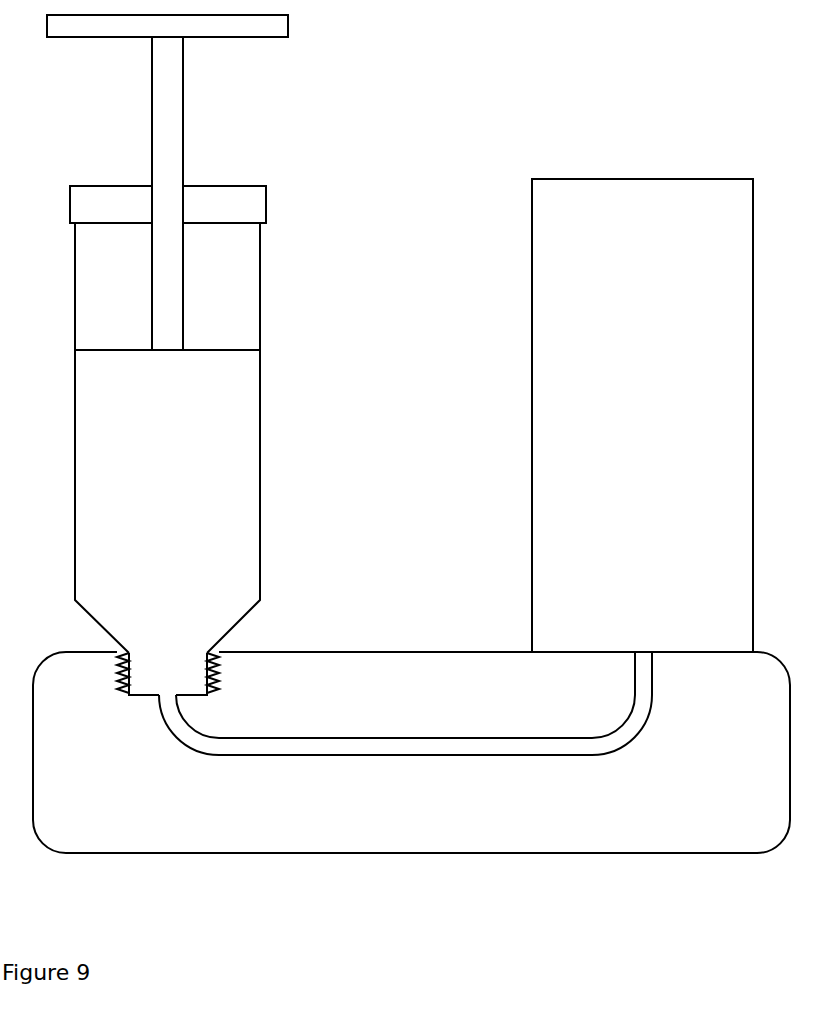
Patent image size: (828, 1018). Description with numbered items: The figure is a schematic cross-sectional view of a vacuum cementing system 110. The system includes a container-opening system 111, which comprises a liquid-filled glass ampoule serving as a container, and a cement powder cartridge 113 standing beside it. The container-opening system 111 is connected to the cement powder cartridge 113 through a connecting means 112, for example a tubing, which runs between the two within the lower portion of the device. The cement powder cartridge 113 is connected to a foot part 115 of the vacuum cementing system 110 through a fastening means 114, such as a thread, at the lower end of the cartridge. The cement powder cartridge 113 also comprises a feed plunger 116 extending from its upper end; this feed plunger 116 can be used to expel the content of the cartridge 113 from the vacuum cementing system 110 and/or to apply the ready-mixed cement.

The vacuum cementing system 110 is at (448, 108).
The container-opening system 111 is at (645, 273).
The connecting means 112 is at (385, 747).
The cement powder cartridge 113 is at (272, 330).
The fastening means 114 is at (133, 654).
The foot part 115 is at (496, 682).
The feed plunger 116 is at (168, 277).